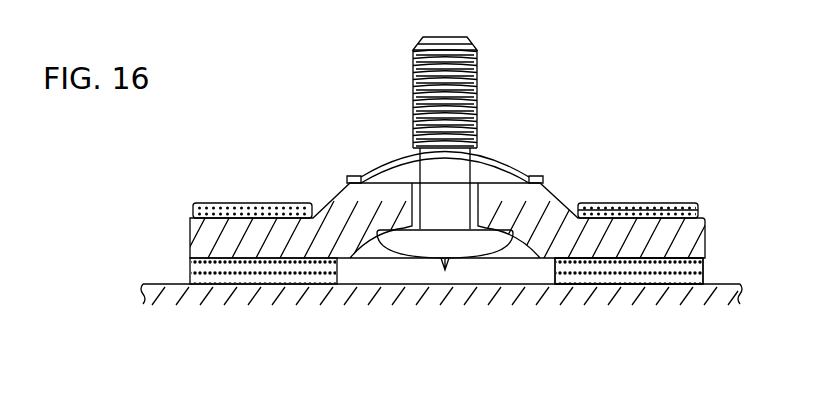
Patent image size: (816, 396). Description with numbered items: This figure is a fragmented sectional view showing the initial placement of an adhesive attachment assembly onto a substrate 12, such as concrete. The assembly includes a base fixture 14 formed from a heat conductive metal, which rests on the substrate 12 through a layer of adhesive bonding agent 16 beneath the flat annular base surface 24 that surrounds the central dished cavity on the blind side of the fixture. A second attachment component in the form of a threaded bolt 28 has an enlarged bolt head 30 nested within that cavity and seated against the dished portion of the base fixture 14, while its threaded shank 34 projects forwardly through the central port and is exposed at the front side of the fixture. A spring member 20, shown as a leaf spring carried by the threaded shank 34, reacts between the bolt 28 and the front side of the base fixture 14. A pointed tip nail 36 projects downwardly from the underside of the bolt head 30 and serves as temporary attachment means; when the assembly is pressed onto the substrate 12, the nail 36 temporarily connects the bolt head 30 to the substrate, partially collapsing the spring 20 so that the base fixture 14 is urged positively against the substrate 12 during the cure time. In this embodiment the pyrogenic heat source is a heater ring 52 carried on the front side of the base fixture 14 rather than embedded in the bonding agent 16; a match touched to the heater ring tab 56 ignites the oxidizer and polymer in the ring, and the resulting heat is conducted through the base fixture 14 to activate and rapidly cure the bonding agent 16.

The substrate 12 is at (697, 293).
The base fixture 14 is at (184, 228).
The adhesive bonding agent 16 is at (232, 284).
The spring member 20 is at (388, 160).
The annular base surface 24 is at (676, 258).
The threaded bolt 28 is at (435, 123).
The bolt head 30 is at (422, 247).
The threaded shank 34 is at (475, 87).
The pointed tip nail 36 is at (446, 268).
The heater ring 52 is at (290, 203).
The heater ring tab 56 is at (692, 207).